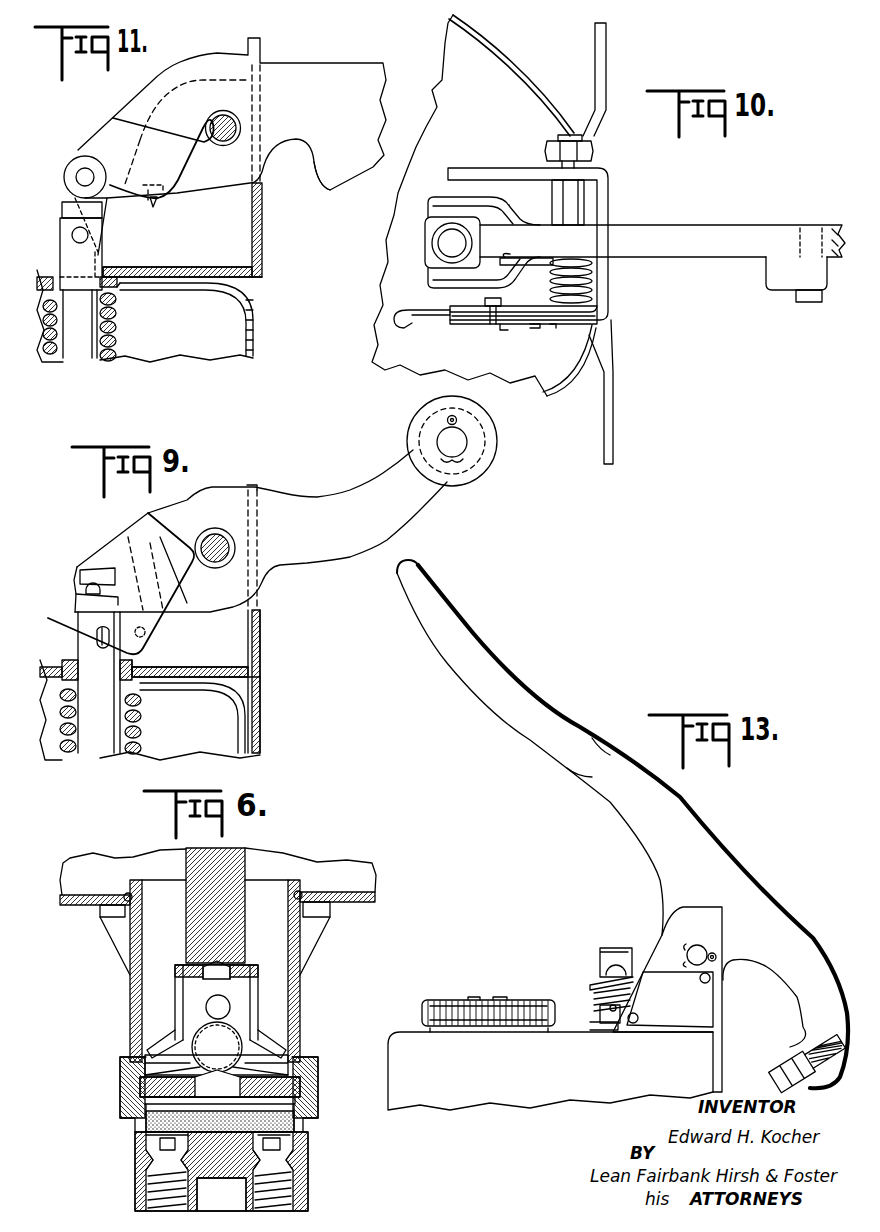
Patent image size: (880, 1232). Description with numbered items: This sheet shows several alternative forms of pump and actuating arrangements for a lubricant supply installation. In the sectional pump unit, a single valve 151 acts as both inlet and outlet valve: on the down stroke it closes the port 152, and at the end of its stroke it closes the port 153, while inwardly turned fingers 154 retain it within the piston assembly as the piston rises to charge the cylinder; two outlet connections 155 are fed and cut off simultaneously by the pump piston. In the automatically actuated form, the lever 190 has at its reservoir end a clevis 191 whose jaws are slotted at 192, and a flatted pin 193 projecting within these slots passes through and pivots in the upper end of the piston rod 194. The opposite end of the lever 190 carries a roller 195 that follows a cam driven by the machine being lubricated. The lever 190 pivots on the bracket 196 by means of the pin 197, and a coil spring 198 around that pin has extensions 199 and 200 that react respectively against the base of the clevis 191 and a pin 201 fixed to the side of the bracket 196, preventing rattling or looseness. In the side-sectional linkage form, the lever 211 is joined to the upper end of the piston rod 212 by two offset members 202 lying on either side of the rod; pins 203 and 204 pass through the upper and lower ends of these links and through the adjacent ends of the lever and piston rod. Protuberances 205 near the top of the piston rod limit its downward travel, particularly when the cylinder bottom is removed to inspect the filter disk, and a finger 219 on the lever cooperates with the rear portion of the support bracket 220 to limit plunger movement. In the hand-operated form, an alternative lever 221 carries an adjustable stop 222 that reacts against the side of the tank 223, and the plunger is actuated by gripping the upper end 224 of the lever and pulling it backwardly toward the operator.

In FIG. 6, the valve 151 is at (228, 1042).
In FIG. 6, the port 152 is at (180, 1012).
In FIG. 6, the port 153 is at (290, 1068).
In FIG. 6, the inwardly turned fingers 154 is at (132, 1072).
In FIG. 6, the outlet connections 155 is at (149, 1195).
In FIG. 10, the lever 190 is at (719, 250).
In FIG. 9, the lever 190 is at (413, 506).
In FIG. 10, the clevis 191 is at (428, 207).
In FIG. 9, the slots 192 is at (100, 568).
In FIG. 9, the flatted pin 193 is at (84, 590).
In FIG. 9, the piston rod 194 is at (105, 747).
In FIG. 10, the roller 195 is at (789, 276).
In FIG. 9, the roller 195 is at (494, 462).
In FIG. 10, the bracket 196 is at (608, 174).
In FIG. 10, the pin 197 is at (576, 207).
In FIG. 10, the coil spring 198 is at (594, 287).
In FIG. 10, the extension 199 is at (510, 259).
In FIG. 10, the extension 200 is at (480, 300).
In FIG. 10, the pin 201 is at (493, 308).
In FIG. 11, the offset members 202 is at (66, 190).
In FIG. 11, the pin 203 is at (86, 168).
In FIG. 11, the pin 204 is at (160, 202).
In FIG. 11, the protuberances 205 is at (60, 210).
In FIG. 11, the lever 211 is at (336, 70).
In FIG. 11, the piston rod 212 is at (86, 350).
In FIG. 11, the finger 219 is at (330, 182).
In FIG. 11, the support bracket 220 is at (262, 272).
In FIG. 13, the lever 221 is at (668, 802).
In FIG. 13, the adjustable stop 222 is at (774, 1058).
In FIG. 13, the tank 223 is at (402, 1095).
In FIG. 13, the upper end of lever 224 is at (466, 636).